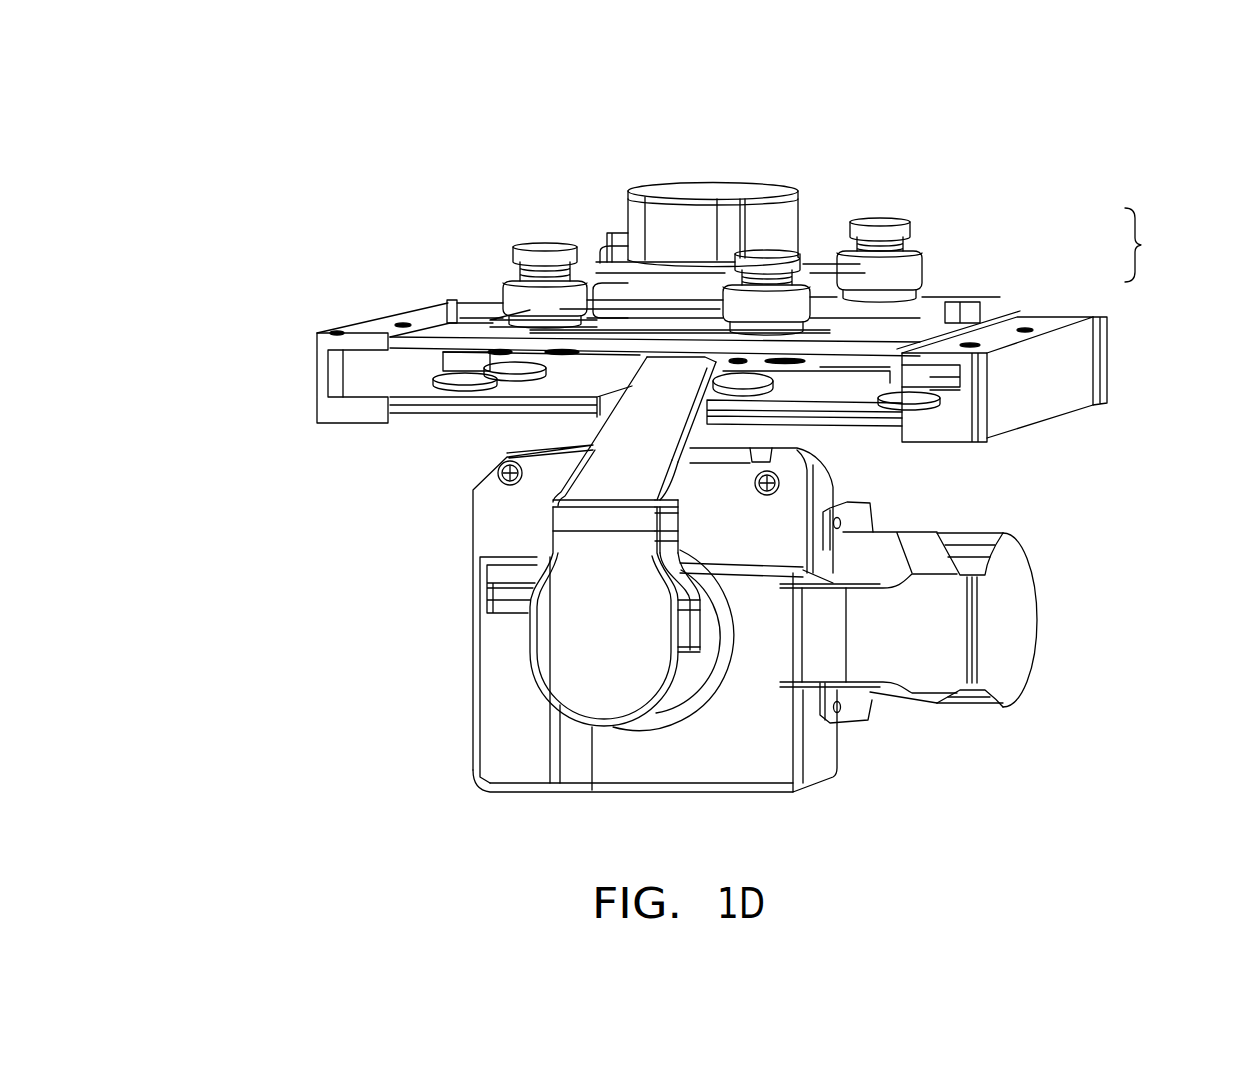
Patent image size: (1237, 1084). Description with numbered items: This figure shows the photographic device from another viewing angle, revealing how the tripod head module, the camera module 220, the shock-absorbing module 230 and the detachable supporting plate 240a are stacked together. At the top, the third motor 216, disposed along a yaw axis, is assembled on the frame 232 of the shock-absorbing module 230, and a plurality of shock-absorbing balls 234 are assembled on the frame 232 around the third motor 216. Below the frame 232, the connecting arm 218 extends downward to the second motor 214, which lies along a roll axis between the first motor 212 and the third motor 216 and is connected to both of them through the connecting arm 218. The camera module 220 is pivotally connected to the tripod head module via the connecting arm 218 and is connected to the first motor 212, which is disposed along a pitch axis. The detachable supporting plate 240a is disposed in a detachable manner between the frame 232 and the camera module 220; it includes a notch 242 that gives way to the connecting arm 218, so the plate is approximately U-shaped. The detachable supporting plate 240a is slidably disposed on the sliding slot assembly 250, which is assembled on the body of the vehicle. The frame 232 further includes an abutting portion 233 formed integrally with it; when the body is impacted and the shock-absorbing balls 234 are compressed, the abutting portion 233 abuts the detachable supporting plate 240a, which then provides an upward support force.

The third motor 216 is at (710, 190).
The shock-absorbing balls 234 is at (915, 270).
The frame 232 is at (997, 318).
The shock-absorbing module 230 is at (1157, 245).
The abutting portion 233 is at (453, 358).
The sliding slot assembly 250 is at (325, 407).
The detachable supporting plate 240a is at (840, 400).
The notch 242 is at (607, 433).
The connecting arm 218 is at (550, 498).
The second motor 214 is at (560, 652).
The first motor 212 is at (1030, 632).
The camera module 220 is at (800, 790).